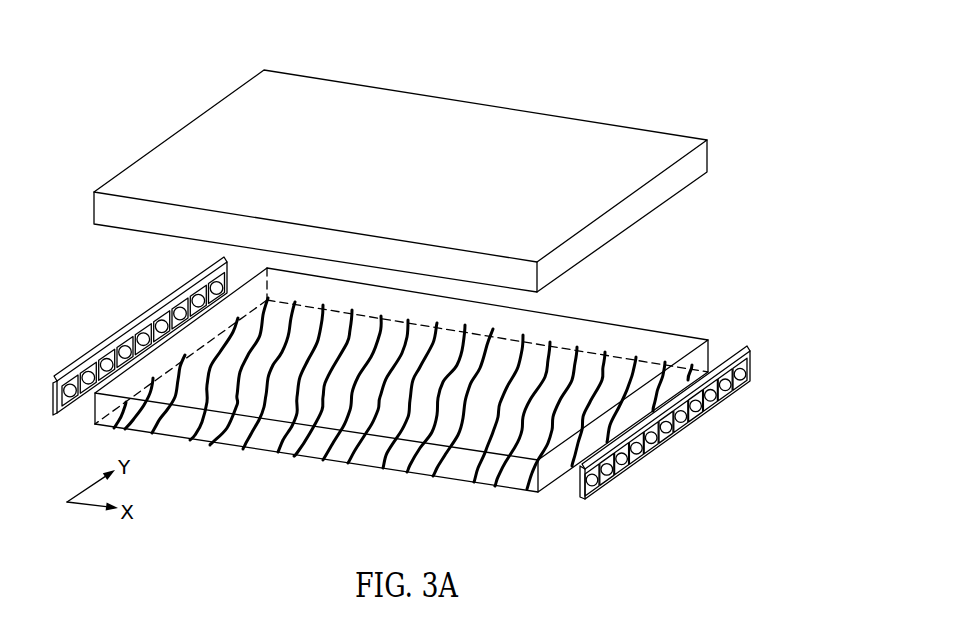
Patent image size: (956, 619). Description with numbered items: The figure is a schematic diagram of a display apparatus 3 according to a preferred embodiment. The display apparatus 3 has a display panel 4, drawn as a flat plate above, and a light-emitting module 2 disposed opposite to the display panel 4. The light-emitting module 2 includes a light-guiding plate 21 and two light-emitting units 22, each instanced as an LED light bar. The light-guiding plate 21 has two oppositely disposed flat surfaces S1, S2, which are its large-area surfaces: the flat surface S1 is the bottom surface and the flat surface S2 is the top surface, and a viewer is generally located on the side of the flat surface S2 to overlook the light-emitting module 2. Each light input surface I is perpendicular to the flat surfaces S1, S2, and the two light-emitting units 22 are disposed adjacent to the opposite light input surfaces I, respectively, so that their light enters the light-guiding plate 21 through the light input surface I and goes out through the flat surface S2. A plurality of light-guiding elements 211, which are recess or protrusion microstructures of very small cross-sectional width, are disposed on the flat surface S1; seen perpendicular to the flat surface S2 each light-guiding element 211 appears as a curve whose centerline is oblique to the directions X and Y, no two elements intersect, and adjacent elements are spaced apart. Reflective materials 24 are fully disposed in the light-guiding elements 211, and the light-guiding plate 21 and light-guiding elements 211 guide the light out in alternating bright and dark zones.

The display apparatus 3 is at (568, 67).
The display panel 4 is at (672, 183).
The light-emitting module 2 is at (284, 486).
The light-guiding plate 21 is at (668, 336).
The light-emitting unit 22 is at (113, 346).
The reflective material 24 is at (238, 446).
The light-guiding element 211 is at (403, 406).
The flat surface S1 is at (510, 478).
The flat surface S2 is at (553, 327).
The light input surface I is at (95, 420).